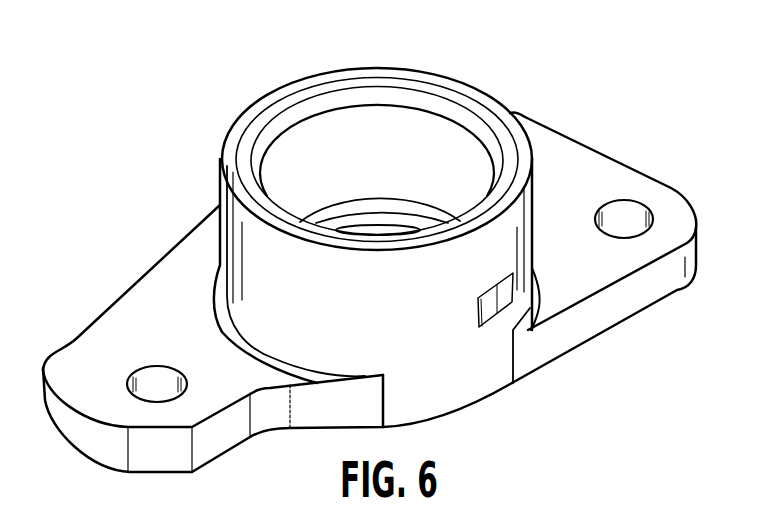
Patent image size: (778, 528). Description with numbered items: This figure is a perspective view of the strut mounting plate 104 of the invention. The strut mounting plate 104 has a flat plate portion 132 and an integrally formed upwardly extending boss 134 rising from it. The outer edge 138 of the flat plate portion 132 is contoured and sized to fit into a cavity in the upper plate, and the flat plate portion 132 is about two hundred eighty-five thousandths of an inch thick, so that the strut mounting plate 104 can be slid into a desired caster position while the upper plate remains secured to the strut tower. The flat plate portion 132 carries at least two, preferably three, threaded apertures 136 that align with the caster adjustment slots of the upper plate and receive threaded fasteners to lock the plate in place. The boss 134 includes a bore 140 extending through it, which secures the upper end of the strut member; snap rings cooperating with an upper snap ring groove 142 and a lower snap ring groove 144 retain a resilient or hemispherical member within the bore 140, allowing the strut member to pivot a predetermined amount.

The strut mounting plate 104 is at (78, 198).
The flat plate portion 132 is at (603, 147).
The upwardly extending boss 134 is at (226, 206).
The threaded apertures 136 is at (632, 207).
The outer edge 138 is at (215, 434).
The bore 140 is at (372, 97).
The upper snap ring groove 142 is at (288, 130).
The lower snap ring groove 144 is at (350, 212).